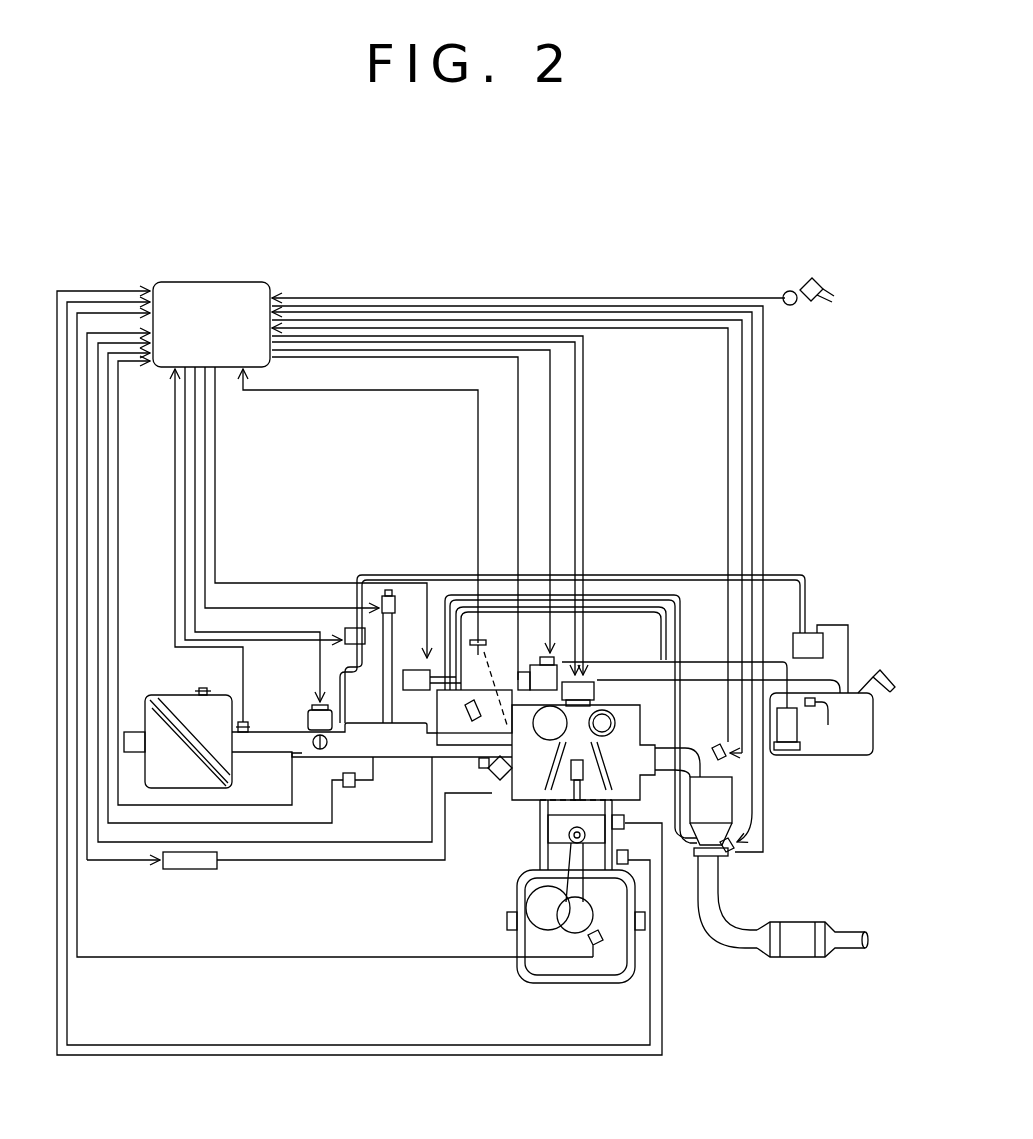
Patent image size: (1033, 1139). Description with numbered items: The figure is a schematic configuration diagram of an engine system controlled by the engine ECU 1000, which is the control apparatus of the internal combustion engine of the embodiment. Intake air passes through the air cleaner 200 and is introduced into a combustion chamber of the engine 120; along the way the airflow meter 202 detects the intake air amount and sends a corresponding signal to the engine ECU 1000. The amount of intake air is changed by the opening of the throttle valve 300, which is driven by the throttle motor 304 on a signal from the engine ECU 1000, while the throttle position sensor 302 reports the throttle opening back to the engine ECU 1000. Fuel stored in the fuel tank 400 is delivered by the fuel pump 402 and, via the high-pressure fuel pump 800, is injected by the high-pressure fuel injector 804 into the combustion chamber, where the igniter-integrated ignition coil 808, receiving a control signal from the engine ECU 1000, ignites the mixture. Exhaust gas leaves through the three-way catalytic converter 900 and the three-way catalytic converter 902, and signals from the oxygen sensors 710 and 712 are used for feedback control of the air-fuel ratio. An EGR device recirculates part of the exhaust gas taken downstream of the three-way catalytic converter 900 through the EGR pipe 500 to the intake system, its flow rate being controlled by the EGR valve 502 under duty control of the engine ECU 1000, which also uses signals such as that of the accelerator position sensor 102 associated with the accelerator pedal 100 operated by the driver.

The engine ECU 1000 is at (232, 282).
The accelerator position sensor 102 is at (784, 293).
The accelerator pedal 100 is at (802, 308).
The EGR pipe 500 is at (657, 576).
The EGR valve 502 is at (422, 655).
The high-pressure fuel pump 800 is at (538, 663).
The oxygen sensor 710 is at (716, 744).
The igniter-integrated ignition coil 808 is at (598, 688).
The air cleaner 200 is at (178, 700).
The throttle motor 304 is at (316, 708).
The airflow meter 202 is at (248, 722).
The throttle valve 300 is at (290, 749).
The throttle position sensor 302 is at (356, 784).
The high-pressure fuel injector 804 is at (502, 782).
The engine 120 is at (488, 869).
The fuel pump 402 is at (790, 751).
The fuel tank 400 is at (855, 756).
The three-way catalytic converter 900 is at (764, 838).
The oxygen sensor 712 is at (736, 852).
The three-way catalytic converter 902 is at (790, 958).